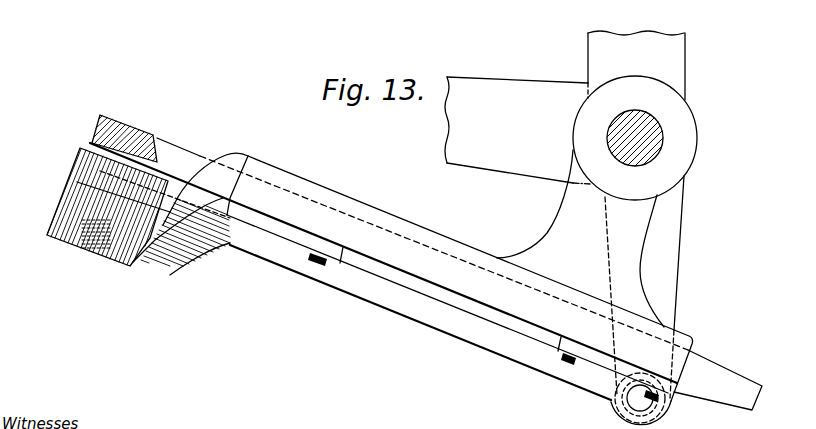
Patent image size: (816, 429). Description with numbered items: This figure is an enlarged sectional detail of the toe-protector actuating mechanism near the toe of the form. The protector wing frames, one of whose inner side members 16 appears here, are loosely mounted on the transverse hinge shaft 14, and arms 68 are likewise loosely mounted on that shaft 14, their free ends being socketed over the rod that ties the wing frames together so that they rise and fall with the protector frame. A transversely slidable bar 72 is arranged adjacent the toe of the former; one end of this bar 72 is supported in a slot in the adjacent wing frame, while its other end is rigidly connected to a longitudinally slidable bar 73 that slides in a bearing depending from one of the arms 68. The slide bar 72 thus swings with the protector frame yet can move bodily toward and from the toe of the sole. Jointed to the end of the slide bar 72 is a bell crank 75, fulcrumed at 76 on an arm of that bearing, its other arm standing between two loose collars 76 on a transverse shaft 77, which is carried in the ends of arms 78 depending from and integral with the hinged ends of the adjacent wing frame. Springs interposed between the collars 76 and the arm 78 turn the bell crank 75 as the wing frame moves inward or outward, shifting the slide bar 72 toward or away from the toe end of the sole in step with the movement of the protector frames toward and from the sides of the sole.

The transverse shaft 14 is at (373, 213).
The inner side member of protector wing 16 is at (505, 148).
The arm 68 is at (607, 55).
The transversely slidable bar 72 is at (100, 126).
The longitudinally slidable bar 73 is at (193, 163).
The bell crank 75 is at (77, 165).
The collar 76 is at (80, 190).
The transverse shaft 77 is at (636, 397).
The arm 78 is at (660, 258).